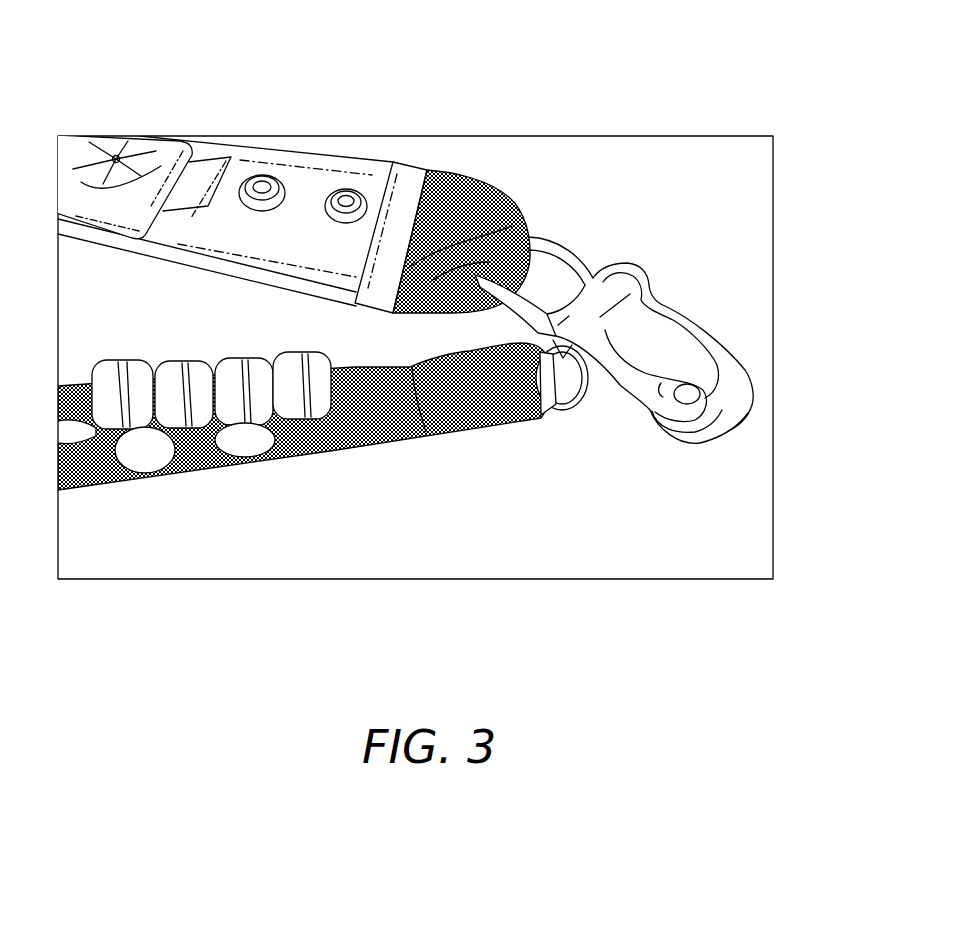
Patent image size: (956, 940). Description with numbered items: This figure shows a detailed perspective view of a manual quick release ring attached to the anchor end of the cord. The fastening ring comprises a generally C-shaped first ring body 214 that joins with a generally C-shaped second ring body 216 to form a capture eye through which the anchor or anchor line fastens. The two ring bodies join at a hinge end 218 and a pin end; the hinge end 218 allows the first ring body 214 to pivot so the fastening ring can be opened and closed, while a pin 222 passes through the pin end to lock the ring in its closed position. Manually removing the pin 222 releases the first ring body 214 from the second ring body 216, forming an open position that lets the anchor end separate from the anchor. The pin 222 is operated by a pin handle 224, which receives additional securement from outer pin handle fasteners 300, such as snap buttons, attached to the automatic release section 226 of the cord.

The first ring body 214 is at (682, 313).
The second ring body 216 is at (627, 373).
The hinge end 218 is at (698, 395).
The pin 222 is at (557, 411).
The pin handle 224 is at (318, 402).
The automatic release section 226 is at (238, 148).
The outer pin handle fasteners 300 is at (327, 188).